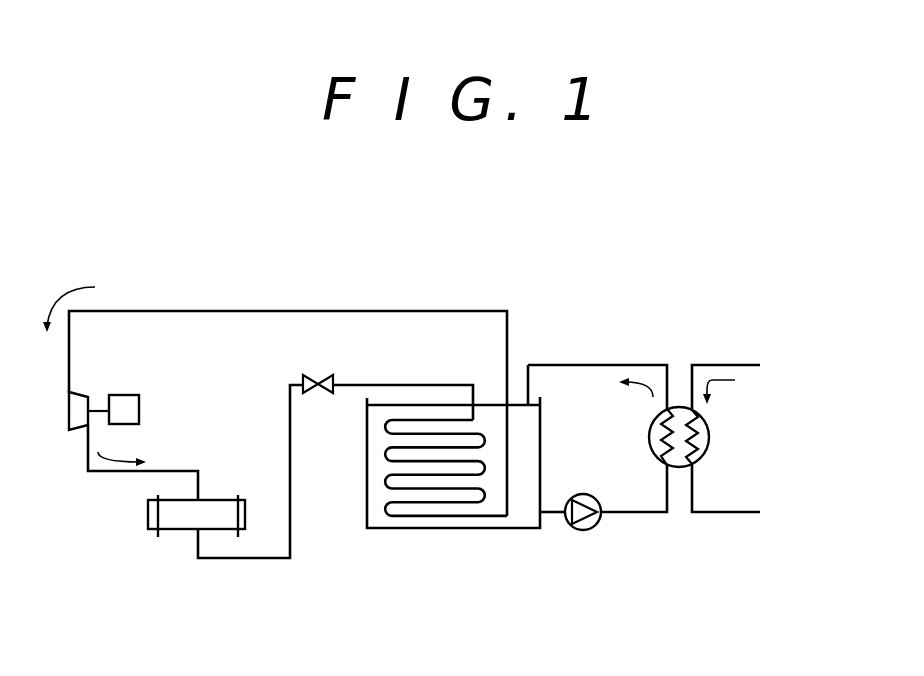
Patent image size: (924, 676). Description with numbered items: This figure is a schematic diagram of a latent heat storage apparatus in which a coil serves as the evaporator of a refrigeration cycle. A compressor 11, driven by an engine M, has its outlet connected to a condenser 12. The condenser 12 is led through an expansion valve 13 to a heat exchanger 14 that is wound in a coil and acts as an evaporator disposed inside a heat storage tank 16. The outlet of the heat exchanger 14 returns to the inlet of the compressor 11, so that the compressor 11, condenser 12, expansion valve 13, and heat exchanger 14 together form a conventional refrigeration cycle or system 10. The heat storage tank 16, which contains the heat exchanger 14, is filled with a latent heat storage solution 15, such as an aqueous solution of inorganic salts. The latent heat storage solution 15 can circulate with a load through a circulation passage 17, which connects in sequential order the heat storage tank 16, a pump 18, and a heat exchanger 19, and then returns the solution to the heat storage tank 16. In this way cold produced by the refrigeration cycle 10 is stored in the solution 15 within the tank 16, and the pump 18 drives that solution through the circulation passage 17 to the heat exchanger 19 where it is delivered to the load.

The refrigeration cycle 10 is at (193, 310).
The compressor 11 is at (75, 395).
The condenser 12 is at (178, 527).
The expansion valve 13 is at (309, 393).
The heat exchanger 14 is at (417, 516).
The latent heat storage solution 15 is at (525, 513).
The heat storage tank 16 is at (486, 530).
The circulation passage 17 is at (630, 515).
The pump 18 is at (580, 532).
The heat exchanger 19 is at (702, 455).